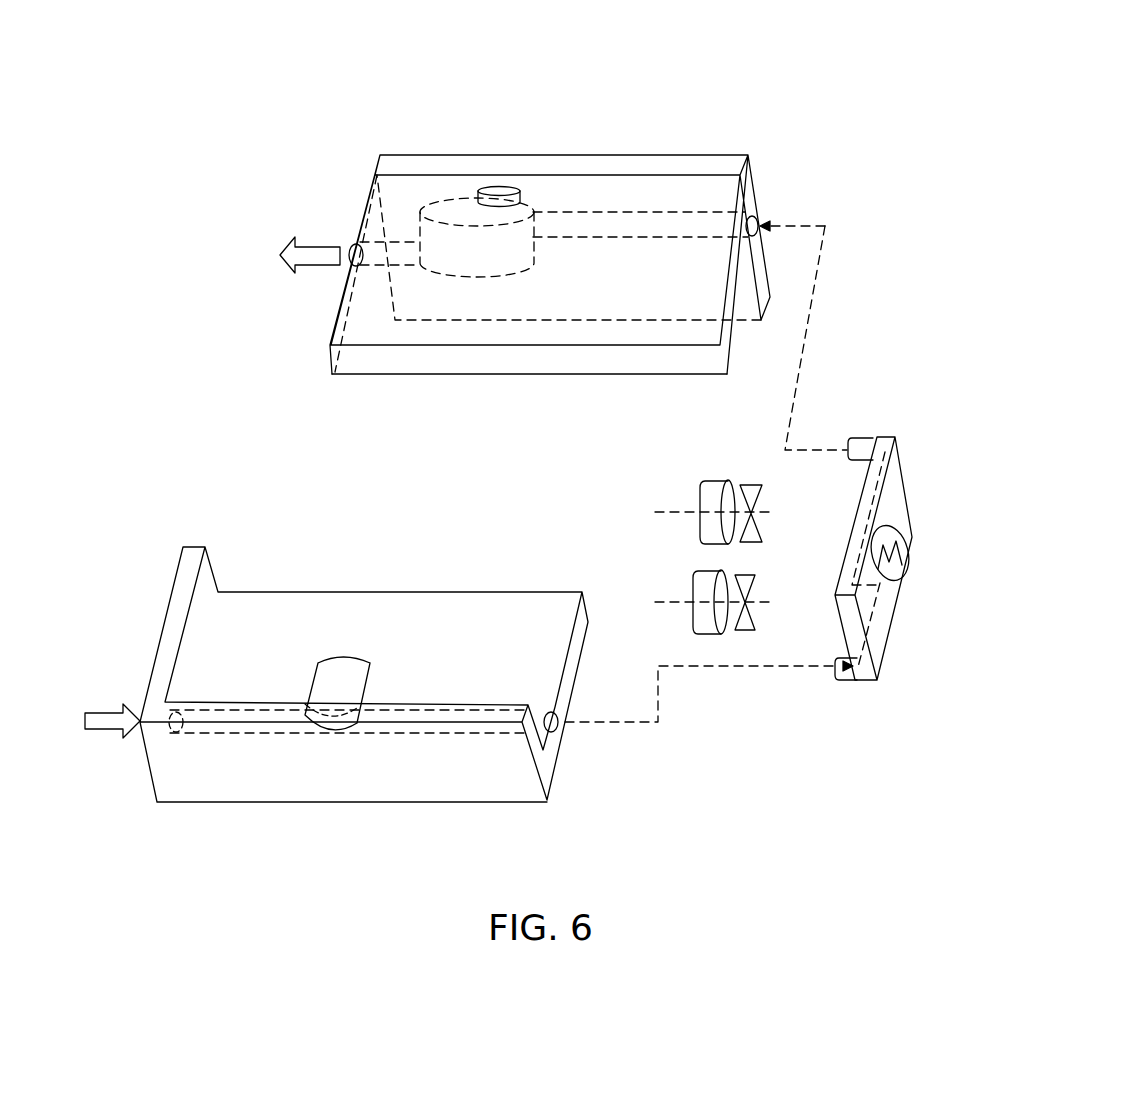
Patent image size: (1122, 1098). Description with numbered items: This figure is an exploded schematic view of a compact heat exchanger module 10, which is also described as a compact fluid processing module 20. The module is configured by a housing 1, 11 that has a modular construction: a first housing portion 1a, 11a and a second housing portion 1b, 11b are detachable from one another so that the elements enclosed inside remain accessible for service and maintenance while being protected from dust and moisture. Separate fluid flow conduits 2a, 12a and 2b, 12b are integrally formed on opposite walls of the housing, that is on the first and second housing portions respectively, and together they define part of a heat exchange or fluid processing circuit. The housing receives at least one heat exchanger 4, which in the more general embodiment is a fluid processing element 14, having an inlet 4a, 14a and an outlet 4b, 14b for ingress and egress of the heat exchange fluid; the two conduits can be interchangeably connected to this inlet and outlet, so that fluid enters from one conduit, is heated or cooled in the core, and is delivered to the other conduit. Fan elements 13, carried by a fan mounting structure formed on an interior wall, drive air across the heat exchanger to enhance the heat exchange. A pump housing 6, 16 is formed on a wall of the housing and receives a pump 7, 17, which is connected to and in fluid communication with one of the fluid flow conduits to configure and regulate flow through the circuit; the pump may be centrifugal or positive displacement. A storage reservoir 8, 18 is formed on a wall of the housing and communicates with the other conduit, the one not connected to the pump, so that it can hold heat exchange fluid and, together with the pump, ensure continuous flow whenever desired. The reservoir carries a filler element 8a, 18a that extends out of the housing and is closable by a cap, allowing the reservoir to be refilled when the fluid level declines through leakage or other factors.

The housing 1 is at (478, 258).
The housing 11 is at (557, 190).
The first housing portion 1a is at (451, 647).
The first housing portion 11a is at (175, 622).
The second housing portion 1b is at (429, 371).
The second housing portion 11b is at (353, 355).
The first fluid flow conduit 2a is at (503, 612).
The fluid flow conduit 12a is at (551, 705).
The second fluid flow conduit 2b is at (587, 338).
The fluid flow conduit 12b is at (578, 228).
The heat exchanger 4 is at (877, 514).
The fluid processing element 14 is at (895, 513).
The inlet 4a is at (817, 730).
The inlet 14a is at (838, 677).
The outlet 4b is at (851, 343).
The outlet 14b is at (855, 450).
The pump housing 6 is at (321, 611).
The pump housing 16 is at (338, 675).
The pump 7 is at (321, 611).
The pump 17 is at (321, 611).
The storage reservoir 8 is at (459, 262).
The storage reservoir 18 is at (478, 255).
The filler element 8a is at (452, 126).
The vent of reservoir chamber 18a is at (497, 181).
The heat exchanger module 10 is at (525, 410).
The compact fluid processing module 20 is at (802, 174).
The fan elements 13 is at (682, 600).